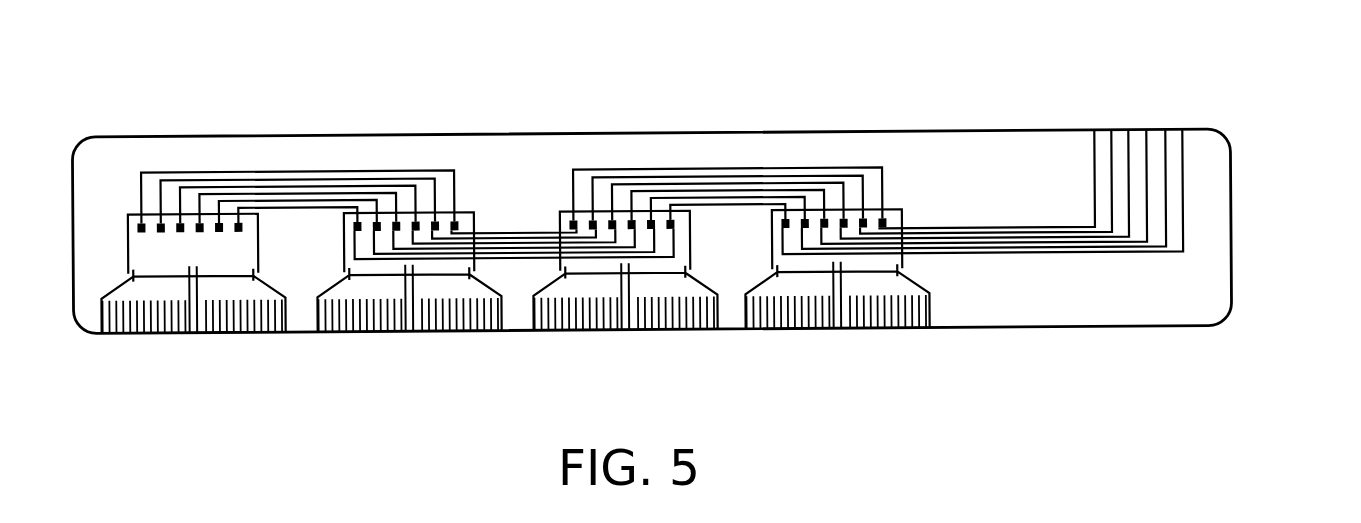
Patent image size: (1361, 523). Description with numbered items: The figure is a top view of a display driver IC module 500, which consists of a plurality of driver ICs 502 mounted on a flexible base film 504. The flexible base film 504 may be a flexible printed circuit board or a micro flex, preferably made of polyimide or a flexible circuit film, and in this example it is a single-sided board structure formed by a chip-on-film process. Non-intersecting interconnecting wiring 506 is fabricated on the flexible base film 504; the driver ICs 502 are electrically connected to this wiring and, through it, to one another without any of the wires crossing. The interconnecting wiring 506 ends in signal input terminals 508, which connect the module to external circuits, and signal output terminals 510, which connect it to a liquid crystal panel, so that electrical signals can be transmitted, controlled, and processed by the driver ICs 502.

The display driver IC module 500 is at (701, 233).
The driver IC 502 is at (347, 256).
The flexible base film 504 is at (1177, 292).
The interconnecting wiring 506 is at (970, 229).
The signal input terminals 508 is at (1140, 133).
The signal output terminals 510 is at (193, 329).